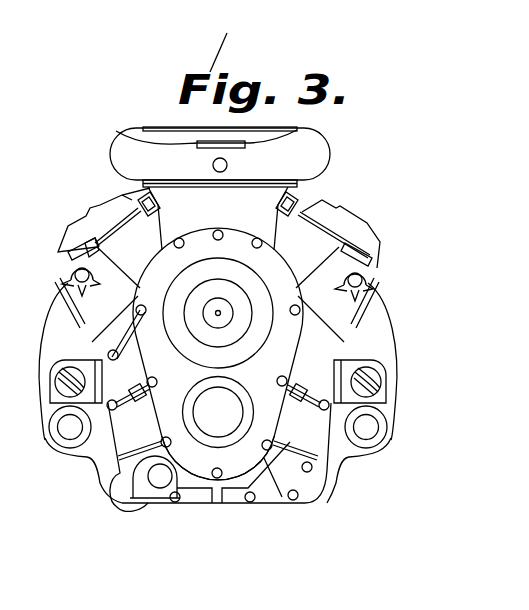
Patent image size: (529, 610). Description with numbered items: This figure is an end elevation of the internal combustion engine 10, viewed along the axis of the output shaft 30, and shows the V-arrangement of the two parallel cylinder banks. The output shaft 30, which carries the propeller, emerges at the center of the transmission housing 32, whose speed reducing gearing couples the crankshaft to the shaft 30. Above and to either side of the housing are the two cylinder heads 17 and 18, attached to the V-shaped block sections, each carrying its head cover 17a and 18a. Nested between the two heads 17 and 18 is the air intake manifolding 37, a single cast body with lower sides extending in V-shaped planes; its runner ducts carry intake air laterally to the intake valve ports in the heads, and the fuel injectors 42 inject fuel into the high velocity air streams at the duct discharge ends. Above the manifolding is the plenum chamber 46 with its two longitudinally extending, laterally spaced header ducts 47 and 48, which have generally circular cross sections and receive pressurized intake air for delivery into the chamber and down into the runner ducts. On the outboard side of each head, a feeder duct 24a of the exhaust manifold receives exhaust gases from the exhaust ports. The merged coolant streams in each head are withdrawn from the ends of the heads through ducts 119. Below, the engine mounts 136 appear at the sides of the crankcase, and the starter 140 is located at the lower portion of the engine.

The internal combustion engine 10 is at (387, 160).
The cylinder head 17 is at (326, 253).
The head cover 17a is at (366, 218).
The cylinder head 18 is at (83, 232).
The head cover 18a is at (88, 213).
The feeder duct 24a is at (400, 328).
The output shaft 30 is at (232, 304).
The transmission housing 32 is at (233, 467).
The air intake manifolding 37 is at (209, 210).
The fuel injector 42 is at (143, 197).
The plenum chamber 46 is at (155, 123).
The header duct 47 is at (319, 145).
The header duct 48 is at (128, 147).
The coolant duct 119 is at (67, 277).
The engine mount 136 is at (55, 432).
The starter 140 is at (127, 503).